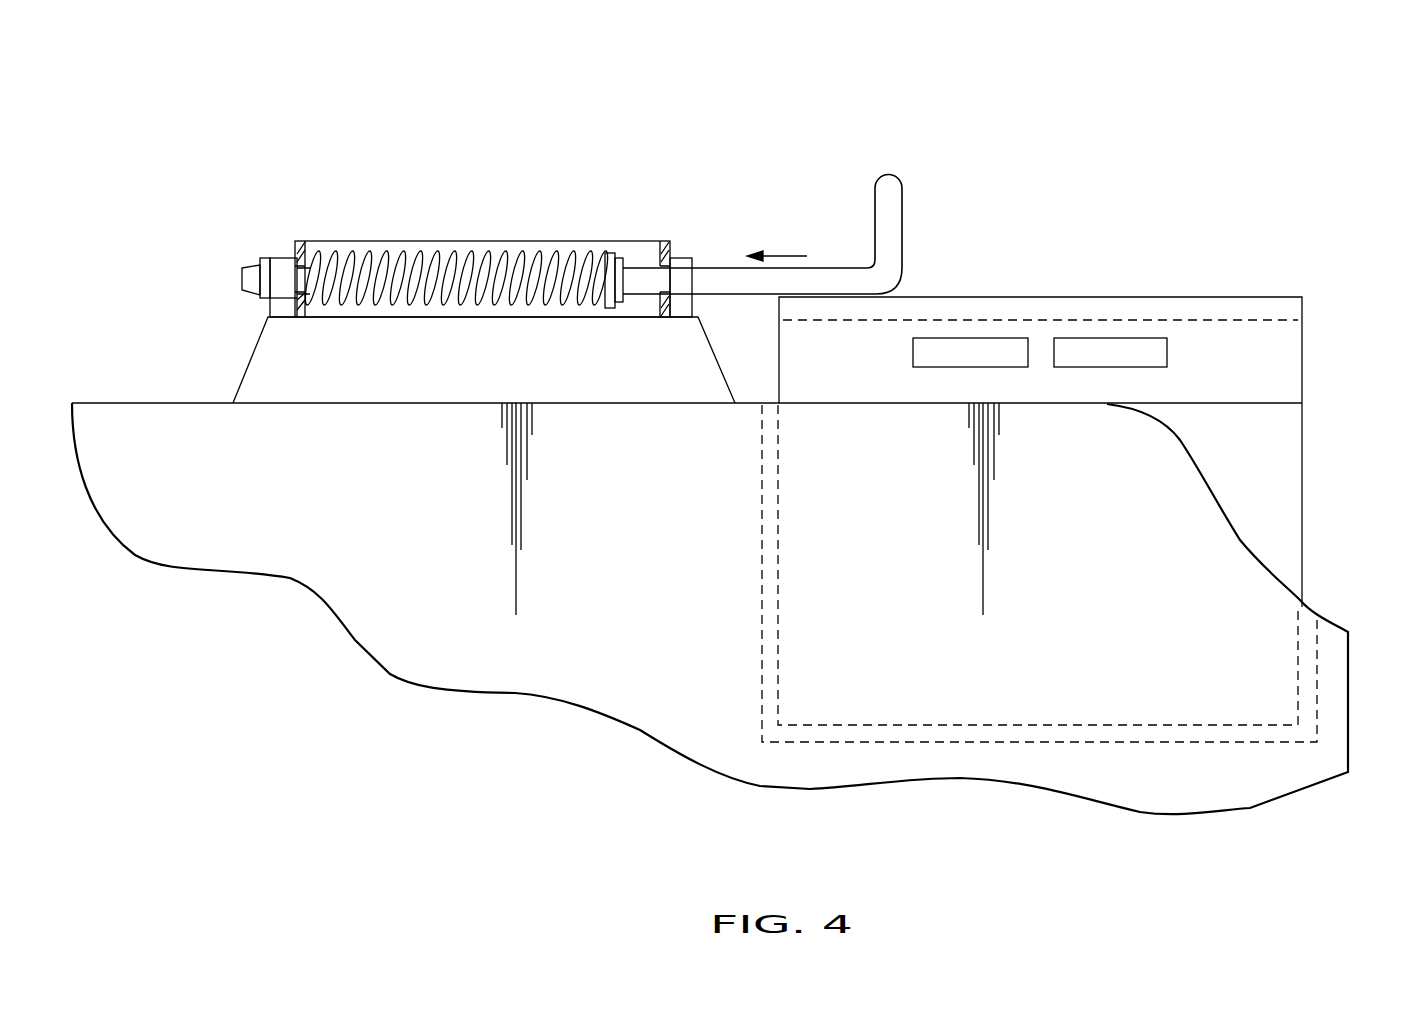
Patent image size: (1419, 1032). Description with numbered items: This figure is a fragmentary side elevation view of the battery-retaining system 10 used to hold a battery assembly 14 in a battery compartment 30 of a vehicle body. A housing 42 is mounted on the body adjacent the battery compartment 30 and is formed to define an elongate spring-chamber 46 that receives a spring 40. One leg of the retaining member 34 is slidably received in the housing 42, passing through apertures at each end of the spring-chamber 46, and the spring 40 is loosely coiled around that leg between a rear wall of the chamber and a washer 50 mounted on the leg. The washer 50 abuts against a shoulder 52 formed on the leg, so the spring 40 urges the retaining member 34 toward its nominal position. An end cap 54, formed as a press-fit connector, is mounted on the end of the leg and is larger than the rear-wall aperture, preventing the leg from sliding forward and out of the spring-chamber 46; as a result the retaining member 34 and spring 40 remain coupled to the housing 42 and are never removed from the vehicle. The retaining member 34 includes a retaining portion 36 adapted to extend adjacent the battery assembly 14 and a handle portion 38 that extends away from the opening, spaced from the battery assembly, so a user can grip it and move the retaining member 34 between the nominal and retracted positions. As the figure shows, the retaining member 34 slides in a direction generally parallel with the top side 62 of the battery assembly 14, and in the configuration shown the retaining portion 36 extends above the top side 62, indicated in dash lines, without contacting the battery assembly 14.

The battery-retaining system 10 is at (772, 123).
The battery assembly 14 is at (1290, 416).
The battery compartment 30 is at (1115, 400).
The retaining member 34 is at (910, 241).
The retaining portion 36 is at (838, 268).
The handle portion 38 is at (890, 187).
The spring 40 is at (455, 252).
The housing 42 is at (268, 375).
The spring-chamber 46 is at (361, 238).
The washer 50 is at (612, 250).
The shoulder 52 is at (620, 306).
The end cap 54 is at (258, 278).
The top side 62 is at (1102, 290).